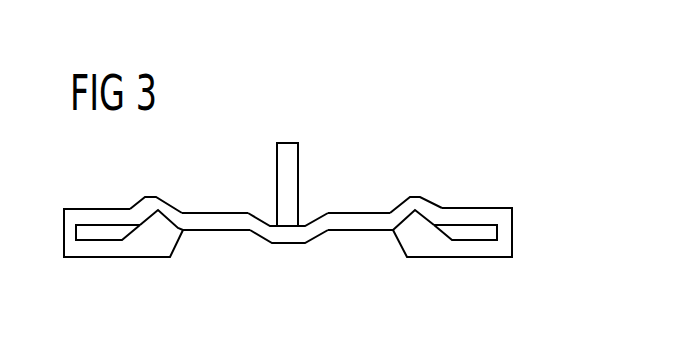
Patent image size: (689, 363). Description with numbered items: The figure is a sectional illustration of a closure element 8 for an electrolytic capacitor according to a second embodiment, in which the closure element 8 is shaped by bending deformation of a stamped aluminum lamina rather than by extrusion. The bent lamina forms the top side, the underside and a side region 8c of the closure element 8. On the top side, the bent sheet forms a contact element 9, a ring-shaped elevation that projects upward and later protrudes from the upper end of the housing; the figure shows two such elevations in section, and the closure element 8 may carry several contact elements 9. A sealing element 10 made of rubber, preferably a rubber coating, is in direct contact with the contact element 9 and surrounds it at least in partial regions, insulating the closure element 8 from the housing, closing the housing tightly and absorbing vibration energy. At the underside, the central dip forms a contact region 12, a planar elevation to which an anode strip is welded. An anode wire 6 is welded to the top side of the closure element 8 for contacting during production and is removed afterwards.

The anode wire 6 is at (287, 172).
The closure element 8 is at (527, 168).
The side region 8c is at (500, 231).
The contact element 9 is at (157, 202).
The sealing element 10 is at (105, 247).
The contact region 12 is at (288, 235).